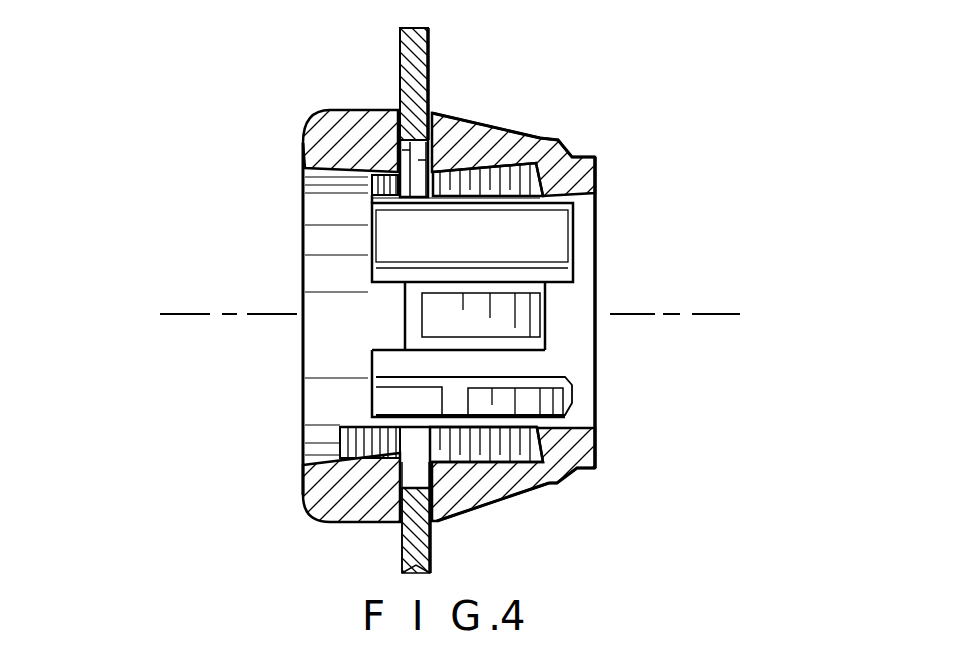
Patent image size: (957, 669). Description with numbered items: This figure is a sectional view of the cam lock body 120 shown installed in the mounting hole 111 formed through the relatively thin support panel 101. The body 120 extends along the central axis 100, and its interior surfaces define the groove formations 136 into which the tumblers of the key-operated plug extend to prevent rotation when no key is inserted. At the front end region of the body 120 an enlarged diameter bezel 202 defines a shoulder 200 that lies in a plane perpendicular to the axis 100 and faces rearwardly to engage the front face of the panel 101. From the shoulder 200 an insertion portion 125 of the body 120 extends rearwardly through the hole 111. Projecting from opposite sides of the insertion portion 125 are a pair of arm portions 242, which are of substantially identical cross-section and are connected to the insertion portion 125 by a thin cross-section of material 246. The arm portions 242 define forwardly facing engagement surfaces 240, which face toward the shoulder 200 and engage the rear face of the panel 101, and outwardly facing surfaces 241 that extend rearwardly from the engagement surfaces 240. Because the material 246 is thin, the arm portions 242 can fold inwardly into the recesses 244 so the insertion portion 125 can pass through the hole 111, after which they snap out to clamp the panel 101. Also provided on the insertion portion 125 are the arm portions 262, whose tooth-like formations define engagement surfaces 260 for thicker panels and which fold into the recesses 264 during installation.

The central axis 100 is at (199, 302).
The support panel 101 is at (428, 60).
The mounting hole 111 is at (420, 156).
The body 120 is at (294, 113).
The insertion portion 125 is at (489, 540).
The groove formations 136 is at (555, 240).
The shoulder 200 is at (412, 155).
The bezel 202 is at (330, 520).
The engagement surfaces 240 is at (372, 197).
The outwardly facing surfaces 241 is at (495, 120).
The arm portions 242 is at (528, 147).
The recesses 244 is at (597, 175).
The thin cross-section of material 246 is at (545, 138).
The engagement surfaces 260 is at (417, 325).
The arm portions 262 is at (457, 284).
The recesses 264 is at (503, 285).